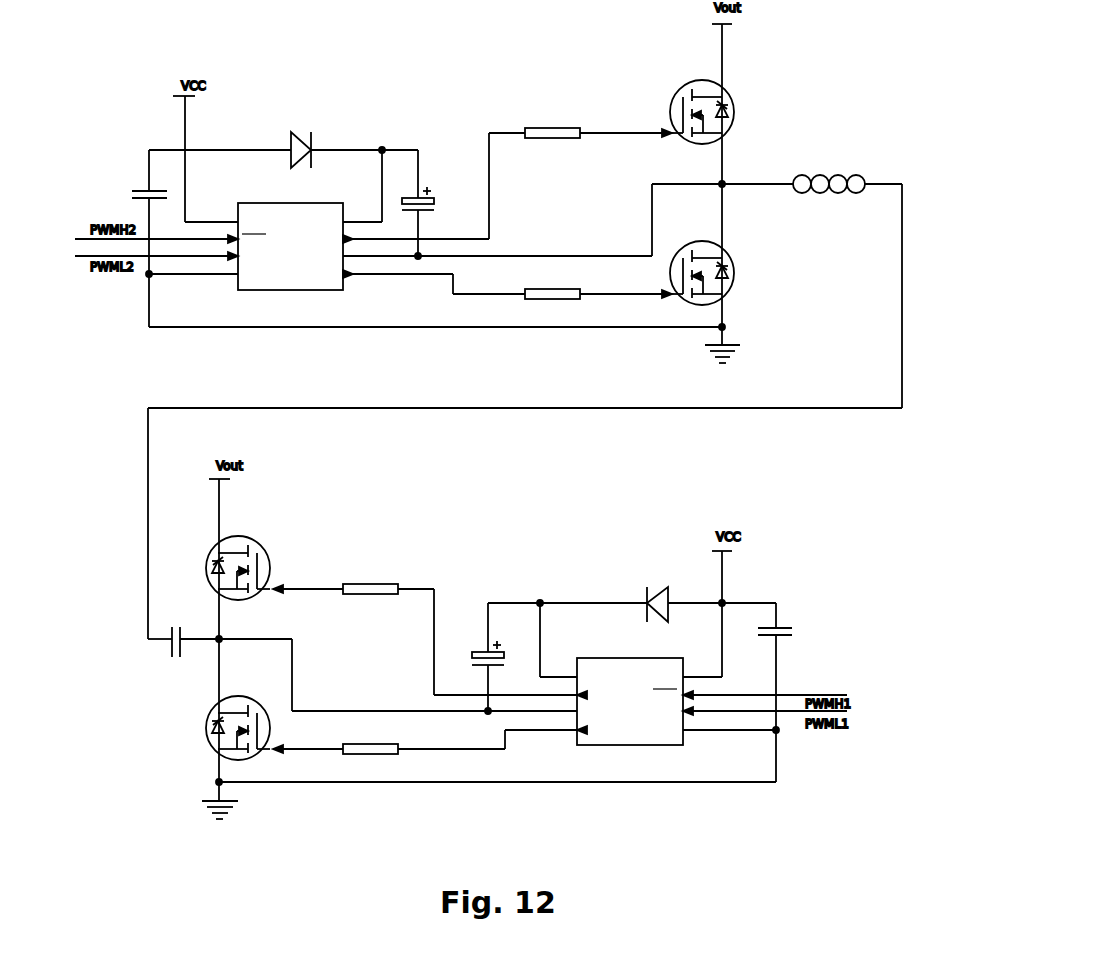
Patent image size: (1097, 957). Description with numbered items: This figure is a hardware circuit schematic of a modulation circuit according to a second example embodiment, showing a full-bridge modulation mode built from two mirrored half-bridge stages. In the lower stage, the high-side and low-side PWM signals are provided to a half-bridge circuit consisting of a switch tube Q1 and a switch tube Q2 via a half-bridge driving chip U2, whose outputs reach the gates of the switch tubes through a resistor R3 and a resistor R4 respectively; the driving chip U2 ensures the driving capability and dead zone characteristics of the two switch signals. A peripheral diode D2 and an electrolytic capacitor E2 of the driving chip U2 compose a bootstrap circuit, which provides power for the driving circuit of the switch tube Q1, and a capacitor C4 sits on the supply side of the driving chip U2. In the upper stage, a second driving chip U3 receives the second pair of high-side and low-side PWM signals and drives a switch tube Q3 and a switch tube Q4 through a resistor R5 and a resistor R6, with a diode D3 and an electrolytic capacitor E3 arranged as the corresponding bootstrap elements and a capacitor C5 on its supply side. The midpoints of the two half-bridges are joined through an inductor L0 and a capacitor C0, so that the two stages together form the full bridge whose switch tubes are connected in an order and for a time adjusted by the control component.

The gate driver IC U3 is at (291, 238).
The half-bridge driving chip U2 is at (634, 693).
The capacitor C5 is at (142, 185).
The capacitor C4 is at (768, 631).
The capacitor C0 is at (174, 632).
The diode D3 is at (288, 150).
The peripheral diode D2 is at (646, 603).
The electrolytic capacitor E3 is at (413, 203).
The electrolytic capacitor E2 is at (482, 657).
The resistor R5 is at (552, 123).
The resistor R6 is at (552, 284).
The resistor R3 is at (370, 580).
The resistor R4 is at (370, 740).
The MOSFET transistor Q3 is at (713, 112).
The MOSFET transistor Q4 is at (713, 273).
The switch tube Q1 is at (228, 568).
The switch tube Q2 is at (228, 728).
The inductor L0 is at (829, 175).